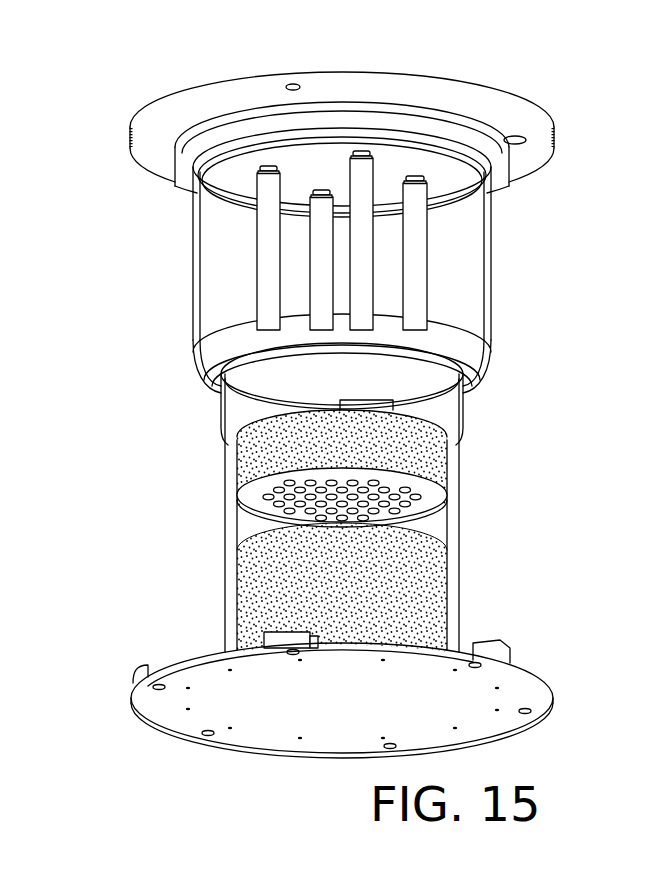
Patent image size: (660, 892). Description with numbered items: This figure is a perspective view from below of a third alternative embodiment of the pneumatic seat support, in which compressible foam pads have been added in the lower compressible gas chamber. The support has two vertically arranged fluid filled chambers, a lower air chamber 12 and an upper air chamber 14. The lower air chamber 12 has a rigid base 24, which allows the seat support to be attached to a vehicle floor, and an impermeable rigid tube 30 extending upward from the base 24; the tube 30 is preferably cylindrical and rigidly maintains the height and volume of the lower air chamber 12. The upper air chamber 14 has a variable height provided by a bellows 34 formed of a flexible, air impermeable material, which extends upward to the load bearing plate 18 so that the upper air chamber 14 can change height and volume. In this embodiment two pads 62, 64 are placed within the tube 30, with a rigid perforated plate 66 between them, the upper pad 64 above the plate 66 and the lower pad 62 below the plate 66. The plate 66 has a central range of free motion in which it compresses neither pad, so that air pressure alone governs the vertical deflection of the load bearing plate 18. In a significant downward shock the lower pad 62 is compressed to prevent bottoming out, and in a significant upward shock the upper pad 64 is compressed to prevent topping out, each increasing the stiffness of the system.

The lower air chamber 12 is at (188, 477).
The upper air chamber 14 is at (150, 240).
The load bearing plate 18 is at (441, 88).
The rigid base 24 is at (273, 718).
The rigid tube 30 is at (453, 607).
The bellows 34 is at (491, 263).
The lower pad 62 is at (427, 580).
The upper pad 64 is at (438, 468).
The rigid perforated plate 66 is at (253, 503).